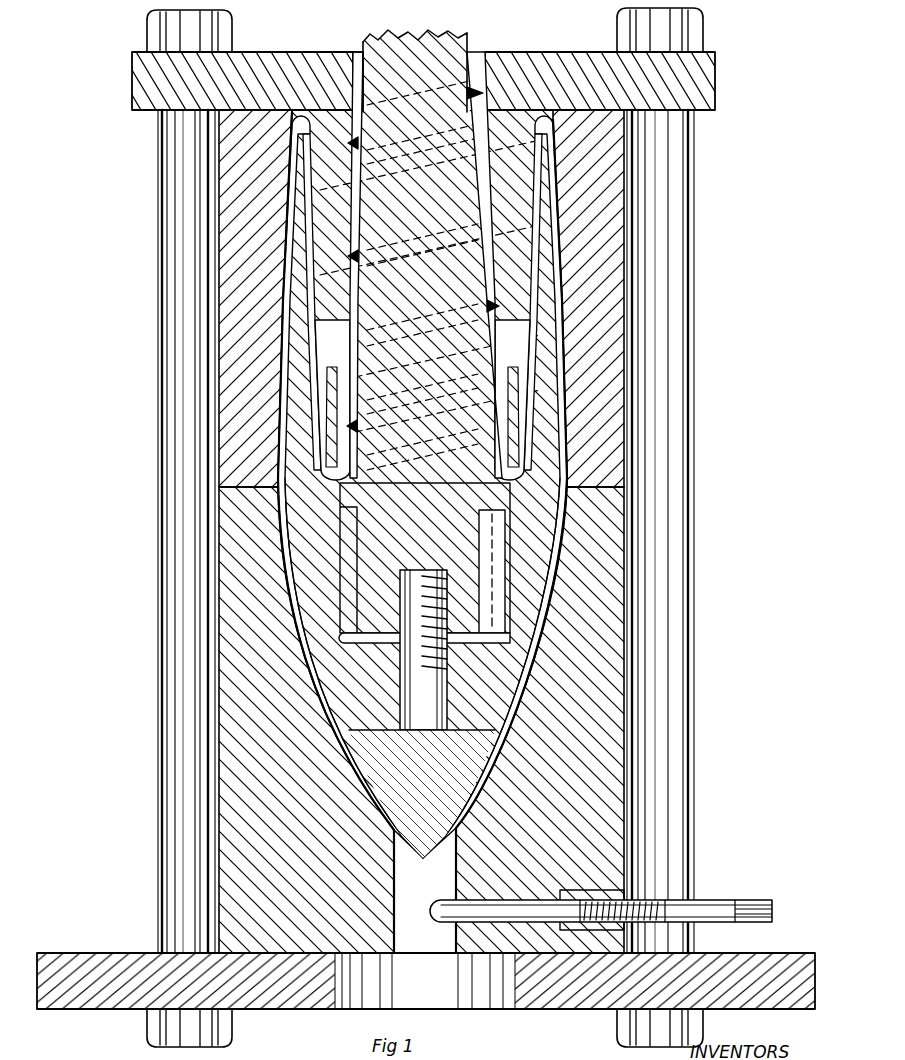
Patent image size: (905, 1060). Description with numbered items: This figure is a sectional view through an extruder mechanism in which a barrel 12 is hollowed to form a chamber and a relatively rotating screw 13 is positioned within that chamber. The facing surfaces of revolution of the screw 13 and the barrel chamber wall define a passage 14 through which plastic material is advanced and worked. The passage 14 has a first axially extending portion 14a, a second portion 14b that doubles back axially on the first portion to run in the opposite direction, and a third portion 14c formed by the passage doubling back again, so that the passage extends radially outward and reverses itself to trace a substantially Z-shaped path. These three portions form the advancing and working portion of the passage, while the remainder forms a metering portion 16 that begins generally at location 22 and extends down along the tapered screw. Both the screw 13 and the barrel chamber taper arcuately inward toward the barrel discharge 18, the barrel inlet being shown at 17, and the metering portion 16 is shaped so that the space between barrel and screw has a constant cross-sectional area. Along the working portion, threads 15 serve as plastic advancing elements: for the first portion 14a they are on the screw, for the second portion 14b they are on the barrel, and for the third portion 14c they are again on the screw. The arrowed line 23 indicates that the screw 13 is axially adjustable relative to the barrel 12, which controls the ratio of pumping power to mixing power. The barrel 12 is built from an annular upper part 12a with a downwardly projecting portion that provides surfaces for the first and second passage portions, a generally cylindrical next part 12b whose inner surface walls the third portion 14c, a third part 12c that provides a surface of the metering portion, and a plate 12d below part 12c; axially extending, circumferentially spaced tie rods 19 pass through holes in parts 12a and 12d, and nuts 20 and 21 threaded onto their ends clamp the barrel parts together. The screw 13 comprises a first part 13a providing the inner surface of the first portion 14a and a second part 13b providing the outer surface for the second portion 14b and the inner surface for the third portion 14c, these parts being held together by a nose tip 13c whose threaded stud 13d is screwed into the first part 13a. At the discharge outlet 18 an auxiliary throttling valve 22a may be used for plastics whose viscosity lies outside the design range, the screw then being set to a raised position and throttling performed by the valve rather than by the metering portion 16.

The barrel 12 is at (426, 530).
The upper part of barrel 12a is at (713, 68).
The next part of barrel 12b is at (618, 328).
The third part of barrel 12c is at (620, 556).
The plate 12d is at (782, 952).
The screw 13 is at (427, 479).
The first part of screw 13a is at (460, 60).
The second part of screw 13b is at (556, 580).
The nose tip 13c is at (425, 853).
The threaded stud 13d is at (403, 600).
The passage 14 is at (506, 445).
The first portion of passage 14a is at (365, 82).
The second portion of passage 14b is at (530, 262).
The third portion of passage 14c is at (560, 289).
The threads 15 is at (360, 52).
The metering portion 16 is at (540, 663).
The barrel inlet 17 is at (362, 58).
The barrel discharge 18 is at (432, 948).
The tie rods 19 is at (175, 607).
The nut 20 is at (697, 1015).
The nut 21 is at (698, 32).
The location where metering portion begins 22 is at (575, 482).
The auxiliary throttling valve 22a is at (716, 905).
The arrowed line 23 is at (425, 13).